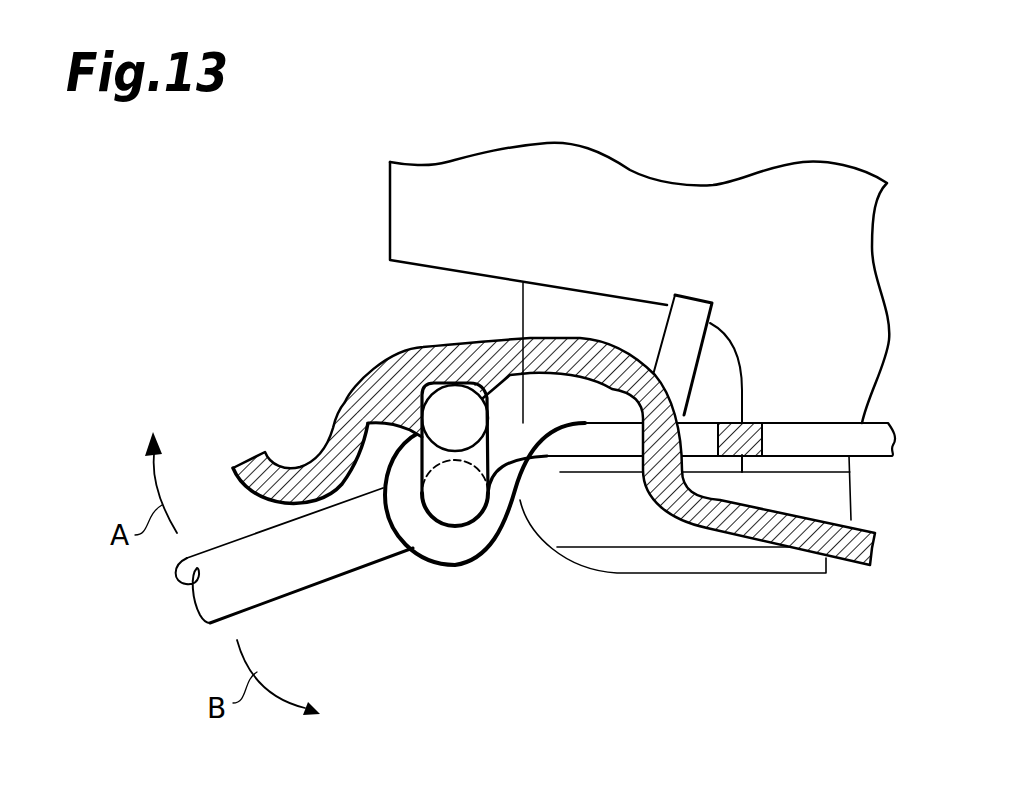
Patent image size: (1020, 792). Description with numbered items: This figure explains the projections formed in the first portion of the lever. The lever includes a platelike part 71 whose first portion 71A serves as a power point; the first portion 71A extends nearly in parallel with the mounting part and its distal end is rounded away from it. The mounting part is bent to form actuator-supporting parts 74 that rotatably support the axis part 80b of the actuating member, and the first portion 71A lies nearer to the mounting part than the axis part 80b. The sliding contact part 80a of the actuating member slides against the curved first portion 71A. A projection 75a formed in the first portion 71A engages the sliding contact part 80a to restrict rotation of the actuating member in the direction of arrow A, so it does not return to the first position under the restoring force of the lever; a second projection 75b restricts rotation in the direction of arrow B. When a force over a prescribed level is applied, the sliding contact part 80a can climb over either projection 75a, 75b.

The platelike part 71 is at (553, 470).
The first portion 71A is at (552, 428).
The actuator-supporting part 74 is at (480, 547).
The projection 75a is at (483, 335).
The projection 75b is at (340, 408).
The sliding contact part 80a is at (487, 420).
The axis part 80b is at (458, 510).